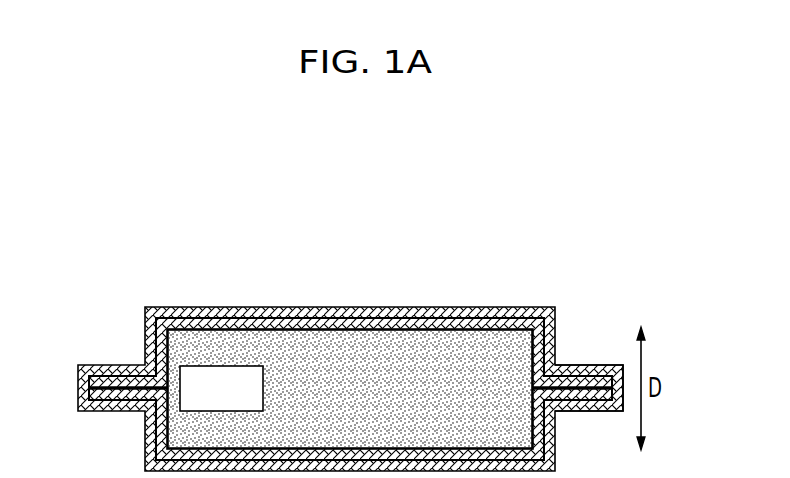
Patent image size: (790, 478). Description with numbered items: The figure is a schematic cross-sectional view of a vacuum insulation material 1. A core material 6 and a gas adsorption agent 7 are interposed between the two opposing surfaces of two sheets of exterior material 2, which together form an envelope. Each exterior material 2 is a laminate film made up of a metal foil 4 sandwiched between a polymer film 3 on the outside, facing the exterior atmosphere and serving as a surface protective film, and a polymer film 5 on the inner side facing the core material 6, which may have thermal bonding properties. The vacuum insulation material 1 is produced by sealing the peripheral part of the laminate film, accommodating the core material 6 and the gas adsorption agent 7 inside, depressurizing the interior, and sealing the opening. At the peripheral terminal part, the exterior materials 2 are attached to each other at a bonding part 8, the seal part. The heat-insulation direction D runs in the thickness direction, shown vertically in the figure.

The vacuum insulation material 1 is at (547, 211).
The exterior material 2 is at (467, 250).
The polymer film 3 is at (458, 312).
The metal foil 4 is at (420, 322).
The polymer film 5 is at (377, 327).
The core material 6 is at (295, 352).
The gas adsorption agent 7 is at (220, 386).
The bonding part 8 is at (597, 365).